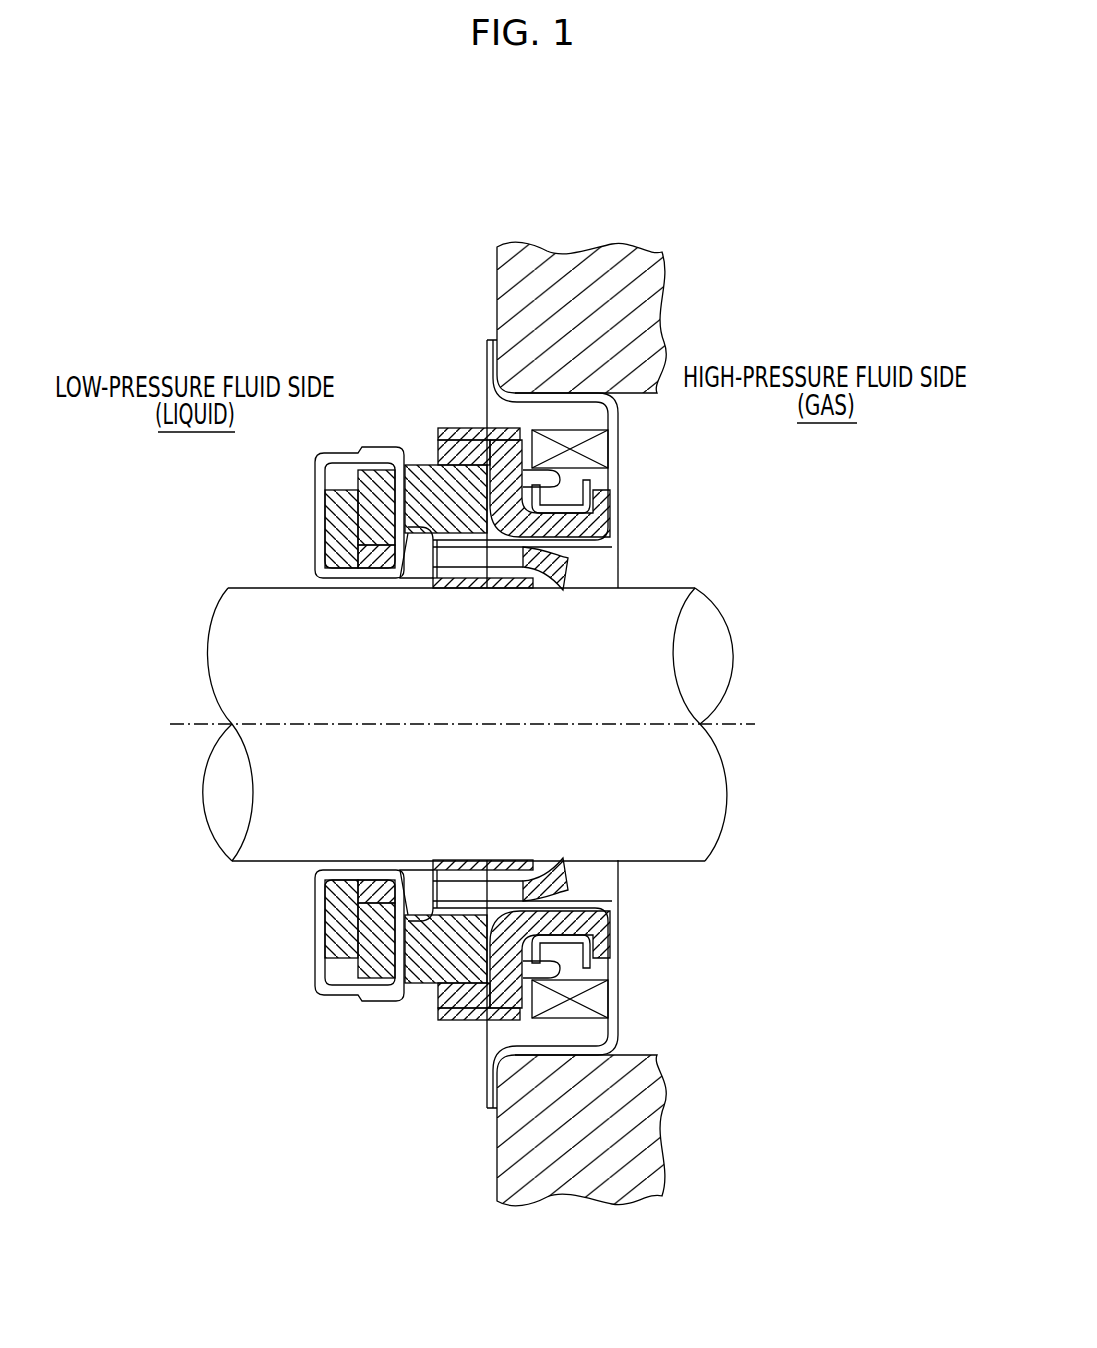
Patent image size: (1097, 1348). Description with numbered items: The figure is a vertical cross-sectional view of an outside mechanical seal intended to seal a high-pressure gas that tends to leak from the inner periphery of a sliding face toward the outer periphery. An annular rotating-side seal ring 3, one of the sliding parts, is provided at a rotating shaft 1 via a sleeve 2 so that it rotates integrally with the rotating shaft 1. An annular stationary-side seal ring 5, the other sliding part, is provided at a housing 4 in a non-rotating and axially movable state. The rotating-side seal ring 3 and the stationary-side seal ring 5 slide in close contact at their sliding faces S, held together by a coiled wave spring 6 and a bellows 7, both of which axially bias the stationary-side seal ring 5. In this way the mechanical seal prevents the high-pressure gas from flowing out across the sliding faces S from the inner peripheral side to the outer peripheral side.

The rotating shaft 1 is at (356, 689).
The sleeve 2 is at (315, 525).
The rotating-side seal ring 3 is at (356, 460).
The housing 4 is at (568, 270).
The stationary-side seal ring 5 is at (410, 465).
The coiled wave spring 6 is at (608, 455).
The bellows 7 is at (484, 431).
The sliding faces S is at (418, 560).